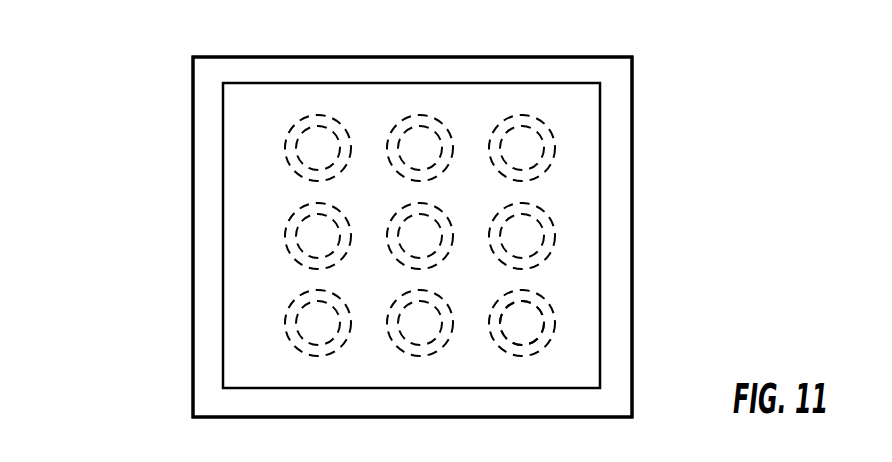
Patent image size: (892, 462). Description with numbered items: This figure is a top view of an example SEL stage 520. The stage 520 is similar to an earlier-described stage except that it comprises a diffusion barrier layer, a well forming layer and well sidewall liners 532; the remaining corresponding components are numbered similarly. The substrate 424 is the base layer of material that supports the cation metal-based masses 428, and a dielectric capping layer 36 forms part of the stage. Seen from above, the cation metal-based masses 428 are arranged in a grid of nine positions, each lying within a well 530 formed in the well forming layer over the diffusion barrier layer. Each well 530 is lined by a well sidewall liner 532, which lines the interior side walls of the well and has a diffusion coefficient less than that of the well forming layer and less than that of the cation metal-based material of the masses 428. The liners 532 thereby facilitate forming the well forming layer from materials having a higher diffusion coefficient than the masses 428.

The SEL stage 520 is at (128, 100).
The substrate 424 is at (633, 95).
The dielectric capping layer 36 is at (465, 83).
The cation metal-based masses 428 is at (541, 302).
The well sidewall liners 532 is at (556, 328).
The wells 530 is at (537, 350).